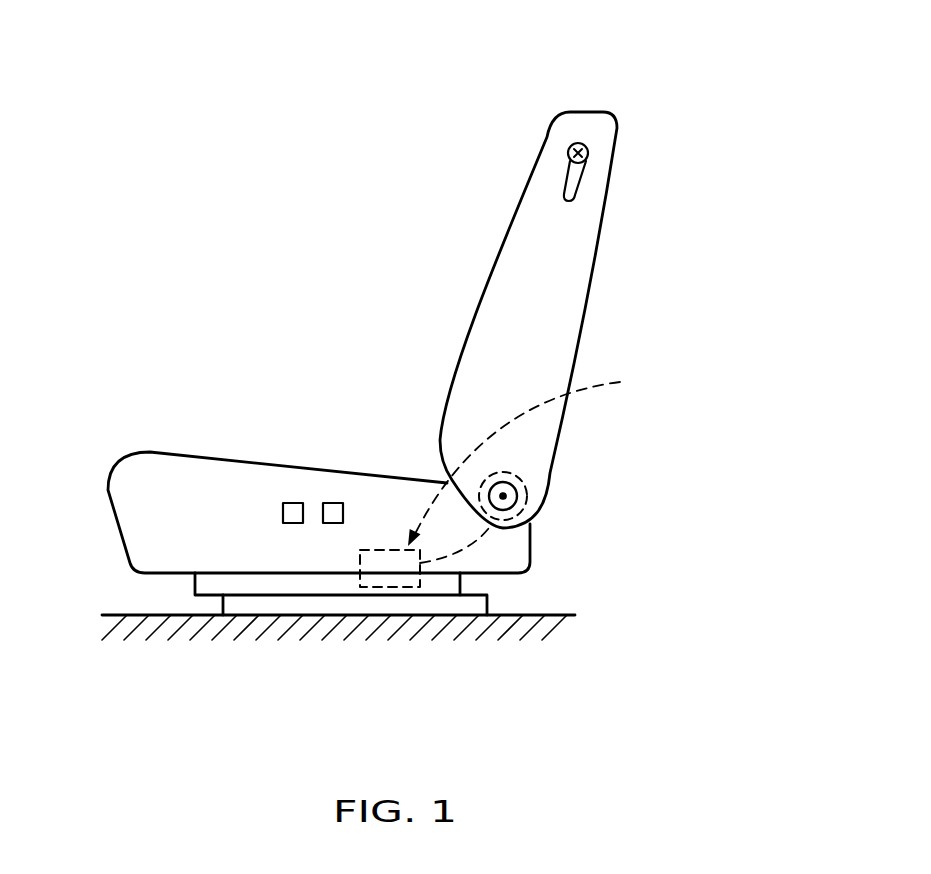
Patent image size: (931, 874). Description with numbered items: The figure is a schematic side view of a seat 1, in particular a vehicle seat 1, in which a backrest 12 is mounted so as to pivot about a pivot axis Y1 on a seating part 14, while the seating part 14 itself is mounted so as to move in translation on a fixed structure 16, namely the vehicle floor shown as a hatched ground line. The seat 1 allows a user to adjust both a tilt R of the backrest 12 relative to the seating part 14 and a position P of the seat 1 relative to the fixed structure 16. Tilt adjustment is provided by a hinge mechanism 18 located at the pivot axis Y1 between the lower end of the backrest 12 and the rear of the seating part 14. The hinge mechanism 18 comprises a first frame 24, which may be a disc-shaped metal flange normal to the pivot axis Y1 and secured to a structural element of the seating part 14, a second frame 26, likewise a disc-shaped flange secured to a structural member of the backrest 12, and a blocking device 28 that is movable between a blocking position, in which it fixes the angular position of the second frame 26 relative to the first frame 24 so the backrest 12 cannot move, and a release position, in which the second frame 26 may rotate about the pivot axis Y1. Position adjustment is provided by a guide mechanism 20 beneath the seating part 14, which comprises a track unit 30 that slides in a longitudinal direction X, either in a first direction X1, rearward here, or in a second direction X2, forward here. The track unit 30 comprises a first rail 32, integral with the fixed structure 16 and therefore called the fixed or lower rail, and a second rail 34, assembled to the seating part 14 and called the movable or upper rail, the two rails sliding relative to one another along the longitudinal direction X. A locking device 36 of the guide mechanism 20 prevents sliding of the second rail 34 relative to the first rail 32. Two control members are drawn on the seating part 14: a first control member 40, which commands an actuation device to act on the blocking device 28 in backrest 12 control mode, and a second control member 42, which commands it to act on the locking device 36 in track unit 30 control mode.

The seat 1 is at (390, 206).
The backrest 12 is at (567, 283).
The seating part 14 is at (218, 478).
The fixed structure 16 is at (125, 615).
The hinge mechanism 18 is at (524, 485).
The guide mechanism 20 is at (531, 460).
The first frame 24 is at (540, 522).
The second frame 26 is at (620, 538).
The blocking device 28 is at (580, 538).
The track unit 30 is at (532, 593).
The first rail 32 is at (390, 603).
The second rail 34 is at (278, 583).
The locking device 36 is at (395, 550).
The first control member 40 is at (290, 503).
The second control member 42 is at (330, 503).
The tilt R is at (500, 95).
The position P is at (188, 337).
The longitudinal direction X is at (663, 722).
The first direction X1 is at (545, 693).
The second direction X2 is at (663, 693).
The pivot axis Y1 is at (503, 496).